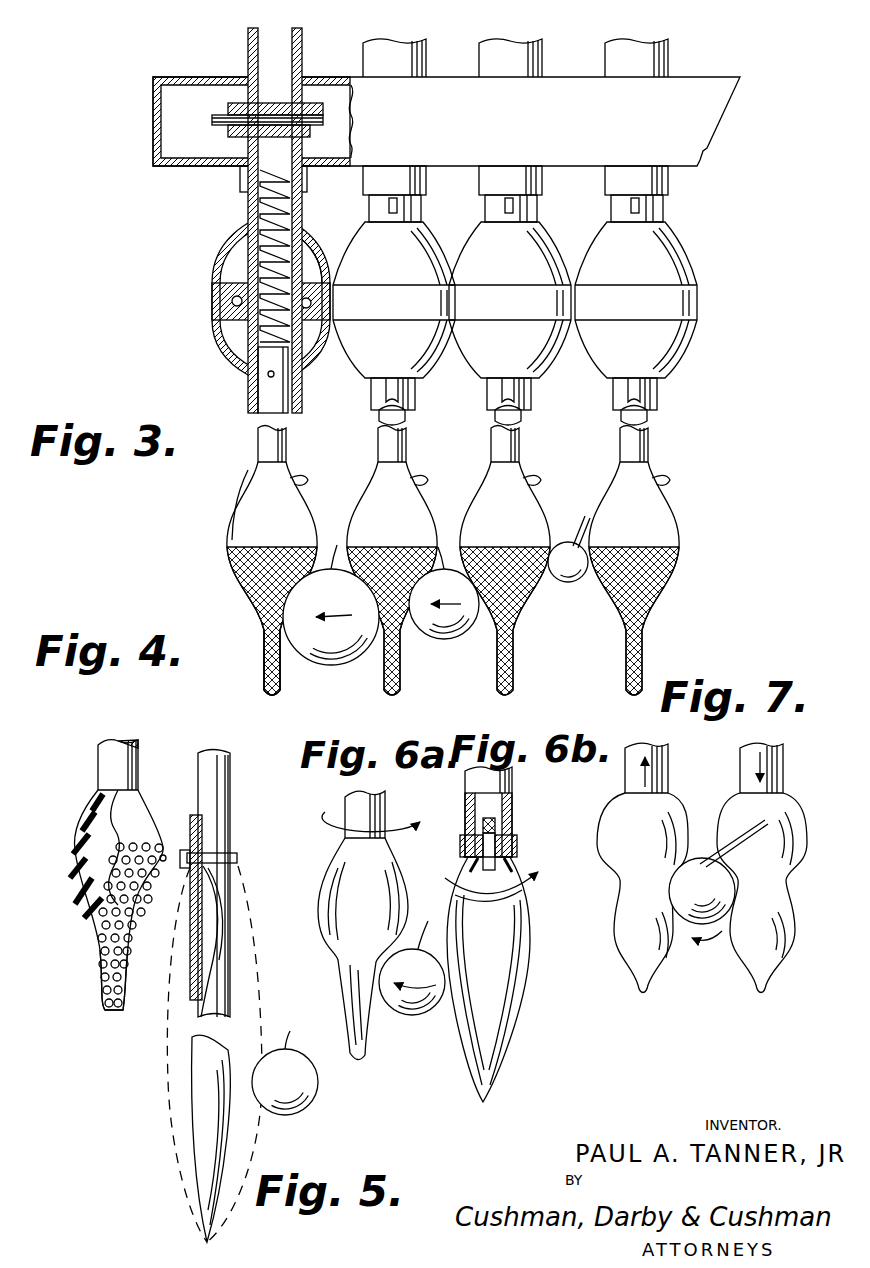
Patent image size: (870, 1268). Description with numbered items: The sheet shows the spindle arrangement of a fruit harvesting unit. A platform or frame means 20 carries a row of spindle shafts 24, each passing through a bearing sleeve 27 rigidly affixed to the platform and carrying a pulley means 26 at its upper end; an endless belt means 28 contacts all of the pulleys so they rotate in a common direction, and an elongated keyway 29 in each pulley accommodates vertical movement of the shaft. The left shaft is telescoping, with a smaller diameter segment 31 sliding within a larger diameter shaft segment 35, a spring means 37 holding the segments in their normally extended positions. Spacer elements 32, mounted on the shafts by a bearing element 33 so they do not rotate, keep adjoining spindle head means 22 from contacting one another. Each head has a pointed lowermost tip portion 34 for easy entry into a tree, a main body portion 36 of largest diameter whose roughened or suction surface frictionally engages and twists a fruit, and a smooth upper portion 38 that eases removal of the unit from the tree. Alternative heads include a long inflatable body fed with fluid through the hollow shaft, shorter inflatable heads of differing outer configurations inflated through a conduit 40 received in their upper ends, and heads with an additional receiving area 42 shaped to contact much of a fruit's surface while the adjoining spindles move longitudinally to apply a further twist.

In FIG. 3, the platform or frame means 20 is at (153, 122).
In FIG. 4, the spindle head means 22 is at (449, 591).
In FIG. 5, the spindle head means 22 is at (169, 1003).
In FIG. 6A, the spindle head means 22 is at (375, 1042).
In FIG. 6B, the spindle head means 22 is at (465, 1055).
In FIG. 7, the spindle head means 22 is at (742, 985).
In FIG. 3, the spindle shaft 24 is at (303, 36).
In FIG. 5, the spindle shaft 24 is at (140, 750).
In FIG. 6A, the spindle shaft 24 is at (387, 803).
In FIG. 6B, the spindle shaft 24 is at (513, 778).
In FIG. 3, the pulley means 26 is at (238, 109).
In FIG. 3, the bearing sleeve 27 is at (420, 185).
In FIG. 3, the endless belt means 28 is at (236, 127).
In FIG. 3, the elongated keyway 29 is at (400, 207).
In FIG. 4, the smaller diameter segment 31 is at (262, 448).
In FIG. 3, the spacer element 32 is at (426, 300).
In FIG. 3, the bearing element 33 is at (235, 324).
In FIG. 4, the lowermost tip portion 34 is at (263, 683).
In FIG. 5, the lowermost tip portion 34 is at (105, 995).
In FIG. 3, the larger diameter shaft segment 35 is at (258, 382).
In FIG. 4, the main body portion 36 is at (248, 567).
In FIG. 5, the main body portion 36 is at (78, 862).
In FIG. 3, the spring means 37 is at (250, 257).
In FIG. 4, the upper portion 38 is at (245, 497).
In FIG. 5, the upper portion 38 is at (80, 810).
In FIG. 6B, the conduit 40 is at (500, 850).
In FIG. 7, the receiving area 42 is at (622, 895).